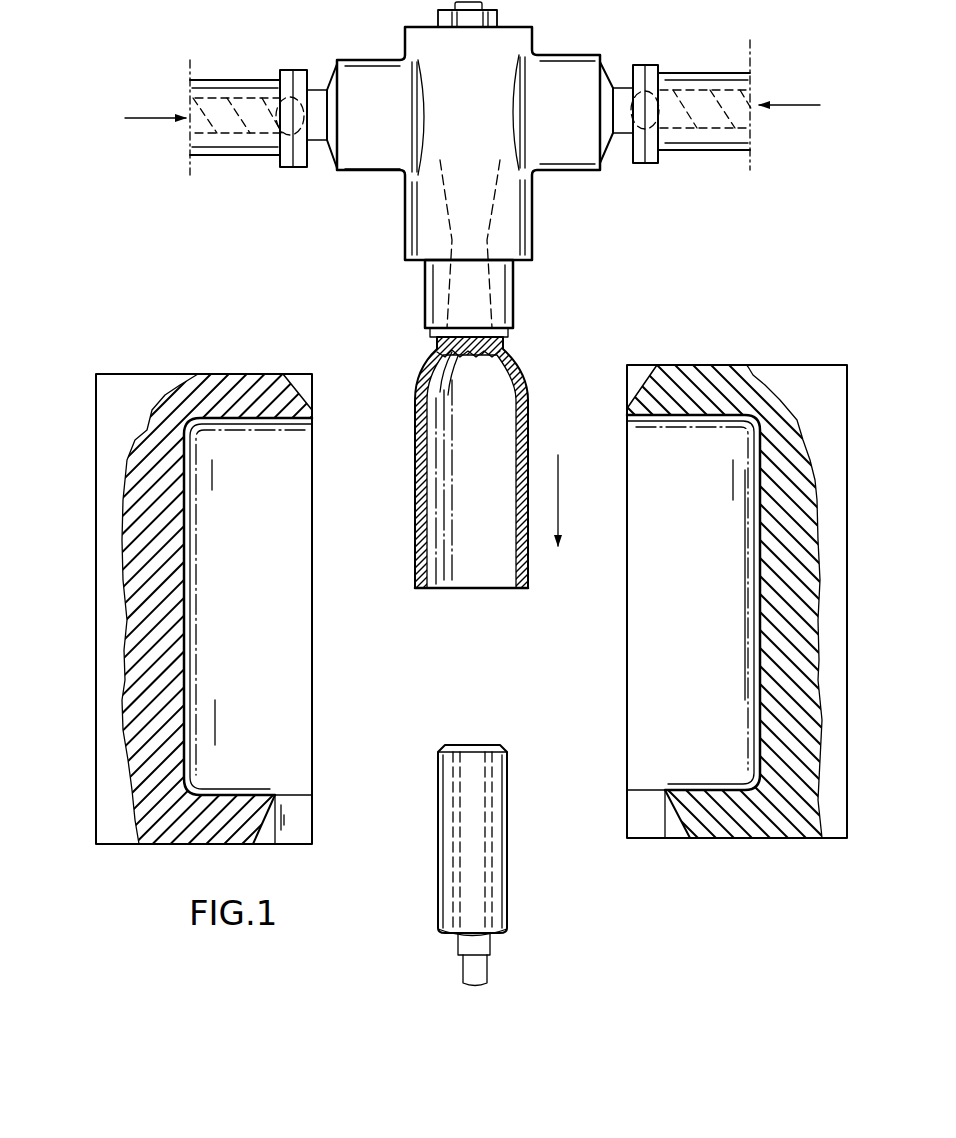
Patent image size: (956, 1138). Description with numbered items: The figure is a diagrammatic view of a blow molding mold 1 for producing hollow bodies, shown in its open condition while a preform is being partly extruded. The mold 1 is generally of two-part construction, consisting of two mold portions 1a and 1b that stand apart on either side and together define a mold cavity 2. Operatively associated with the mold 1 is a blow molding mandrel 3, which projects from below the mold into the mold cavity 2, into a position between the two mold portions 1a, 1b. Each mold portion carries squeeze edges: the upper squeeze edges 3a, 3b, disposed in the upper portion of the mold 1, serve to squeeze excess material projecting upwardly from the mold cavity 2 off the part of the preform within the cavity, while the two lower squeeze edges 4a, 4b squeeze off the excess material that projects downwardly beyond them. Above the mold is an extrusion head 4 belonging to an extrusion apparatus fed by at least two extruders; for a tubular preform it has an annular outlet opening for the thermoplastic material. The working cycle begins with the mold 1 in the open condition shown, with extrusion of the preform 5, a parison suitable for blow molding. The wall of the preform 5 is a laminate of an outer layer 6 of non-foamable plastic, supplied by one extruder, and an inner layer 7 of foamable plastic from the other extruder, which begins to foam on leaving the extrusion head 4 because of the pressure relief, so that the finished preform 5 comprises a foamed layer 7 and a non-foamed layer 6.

The blow molding mold 1 is at (478, 548).
The mold portion 1a is at (383, 582).
The mold portion 1b is at (554, 575).
The mold cavity 2 is at (298, 521).
The blow molding mandrel 3 is at (497, 795).
The squeeze edge 3a is at (312, 418).
The squeeze edge 3b is at (627, 410).
The extrusion head 4 is at (513, 297).
The squeeze edge 4a is at (277, 797).
The squeeze edge 4b is at (655, 795).
The preform 5 is at (471, 455).
The outer layer 6 is at (526, 582).
The inner layer 7 is at (523, 412).